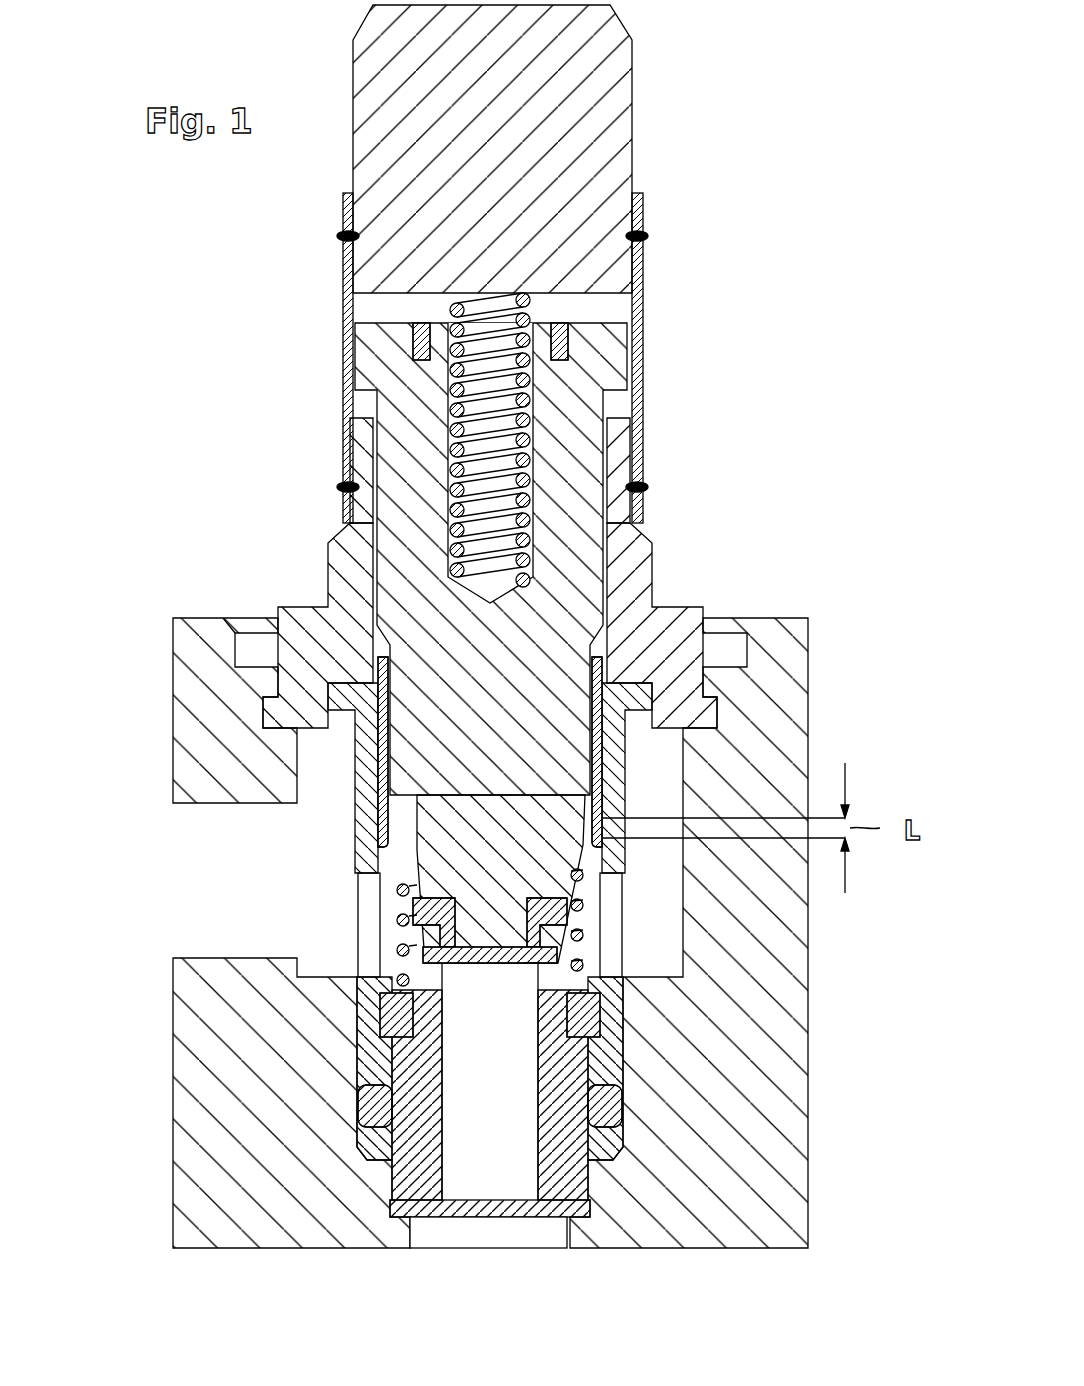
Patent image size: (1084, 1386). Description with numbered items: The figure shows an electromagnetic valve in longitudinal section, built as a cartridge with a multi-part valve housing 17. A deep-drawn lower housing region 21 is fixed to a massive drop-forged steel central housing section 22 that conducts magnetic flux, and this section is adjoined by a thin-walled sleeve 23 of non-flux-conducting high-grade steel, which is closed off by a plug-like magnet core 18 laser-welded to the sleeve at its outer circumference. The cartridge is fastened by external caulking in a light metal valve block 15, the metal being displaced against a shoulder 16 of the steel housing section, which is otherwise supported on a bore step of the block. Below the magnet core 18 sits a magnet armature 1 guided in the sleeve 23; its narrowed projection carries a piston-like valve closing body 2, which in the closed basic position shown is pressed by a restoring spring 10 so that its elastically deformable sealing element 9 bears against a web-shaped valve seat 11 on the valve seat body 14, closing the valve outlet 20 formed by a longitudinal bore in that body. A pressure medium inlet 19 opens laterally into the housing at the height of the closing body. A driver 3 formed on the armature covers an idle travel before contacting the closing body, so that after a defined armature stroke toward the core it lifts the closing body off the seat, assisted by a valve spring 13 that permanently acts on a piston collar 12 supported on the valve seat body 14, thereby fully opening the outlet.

The magnet armature 1 is at (607, 552).
The valve closing body 2 is at (538, 873).
The driver 3 is at (627, 747).
The sealing element 9 is at (583, 940).
The restoring spring 10 is at (537, 385).
The valve seat 11 is at (532, 963).
The piston collar 12 is at (384, 846).
The valve spring 13 is at (553, 947).
The valve seat body 14 is at (565, 1168).
The valve block 15 is at (783, 630).
The shoulder 16 is at (275, 697).
The valve housing 17 is at (394, 460).
The magnet core 18 is at (572, 113).
The pressure medium inlet 19 is at (366, 977).
The valve outlet 20 is at (443, 1160).
The lower housing region 21 is at (317, 687).
The central housing section 22 is at (350, 566).
The sleeve 23 is at (338, 437).